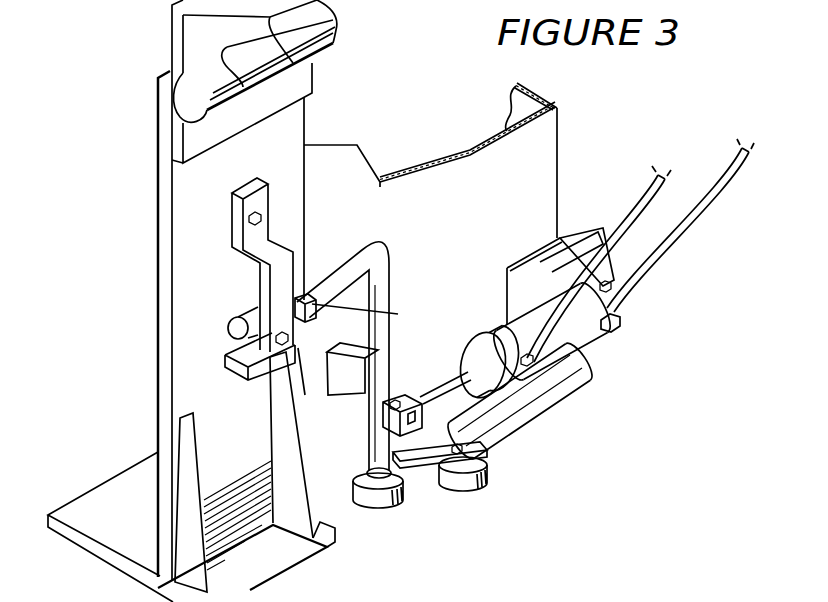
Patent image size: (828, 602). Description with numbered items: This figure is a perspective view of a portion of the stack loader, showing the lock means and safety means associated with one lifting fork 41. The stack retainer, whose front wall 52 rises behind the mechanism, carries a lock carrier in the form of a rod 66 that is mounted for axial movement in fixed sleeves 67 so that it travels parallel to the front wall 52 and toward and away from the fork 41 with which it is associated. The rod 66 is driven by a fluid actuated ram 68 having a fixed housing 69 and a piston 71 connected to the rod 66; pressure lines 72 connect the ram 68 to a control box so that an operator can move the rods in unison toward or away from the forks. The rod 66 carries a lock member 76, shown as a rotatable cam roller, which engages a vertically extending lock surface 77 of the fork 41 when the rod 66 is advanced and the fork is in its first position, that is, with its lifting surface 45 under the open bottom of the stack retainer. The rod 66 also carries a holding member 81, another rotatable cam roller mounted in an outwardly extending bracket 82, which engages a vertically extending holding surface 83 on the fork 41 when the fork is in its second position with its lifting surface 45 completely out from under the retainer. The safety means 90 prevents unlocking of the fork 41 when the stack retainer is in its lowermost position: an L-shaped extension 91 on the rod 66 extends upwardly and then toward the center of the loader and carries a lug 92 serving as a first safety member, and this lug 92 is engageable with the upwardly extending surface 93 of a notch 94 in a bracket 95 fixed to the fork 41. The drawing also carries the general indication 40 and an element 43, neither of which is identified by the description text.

The assembly 40 is at (318, 129).
The fork 41 is at (183, 187).
The cushion 43 is at (178, 49).
The lifting surfaces 45 is at (123, 514).
The front wall 52 is at (501, 210).
The lock carriers 66 is at (426, 430).
The fixed sleeves 67 is at (538, 388).
The fluid actuated rams 68 is at (622, 320).
The fixed housing 69 is at (525, 330).
The piston 71 is at (448, 388).
The pressure lines 72 is at (707, 202).
The lock member 76 is at (382, 503).
The lock surface 77 is at (343, 467).
The holding member 81 is at (490, 464).
The outwardly extending bracket 82 is at (428, 462).
The holding surface 83 is at (157, 372).
The safety means 90 is at (238, 388).
The L-shaped extension 91 is at (382, 291).
The lug 92 is at (306, 296).
The upwardly extending surface 93 is at (393, 313).
The notch 94 is at (308, 346).
The bracket 95 is at (247, 365).